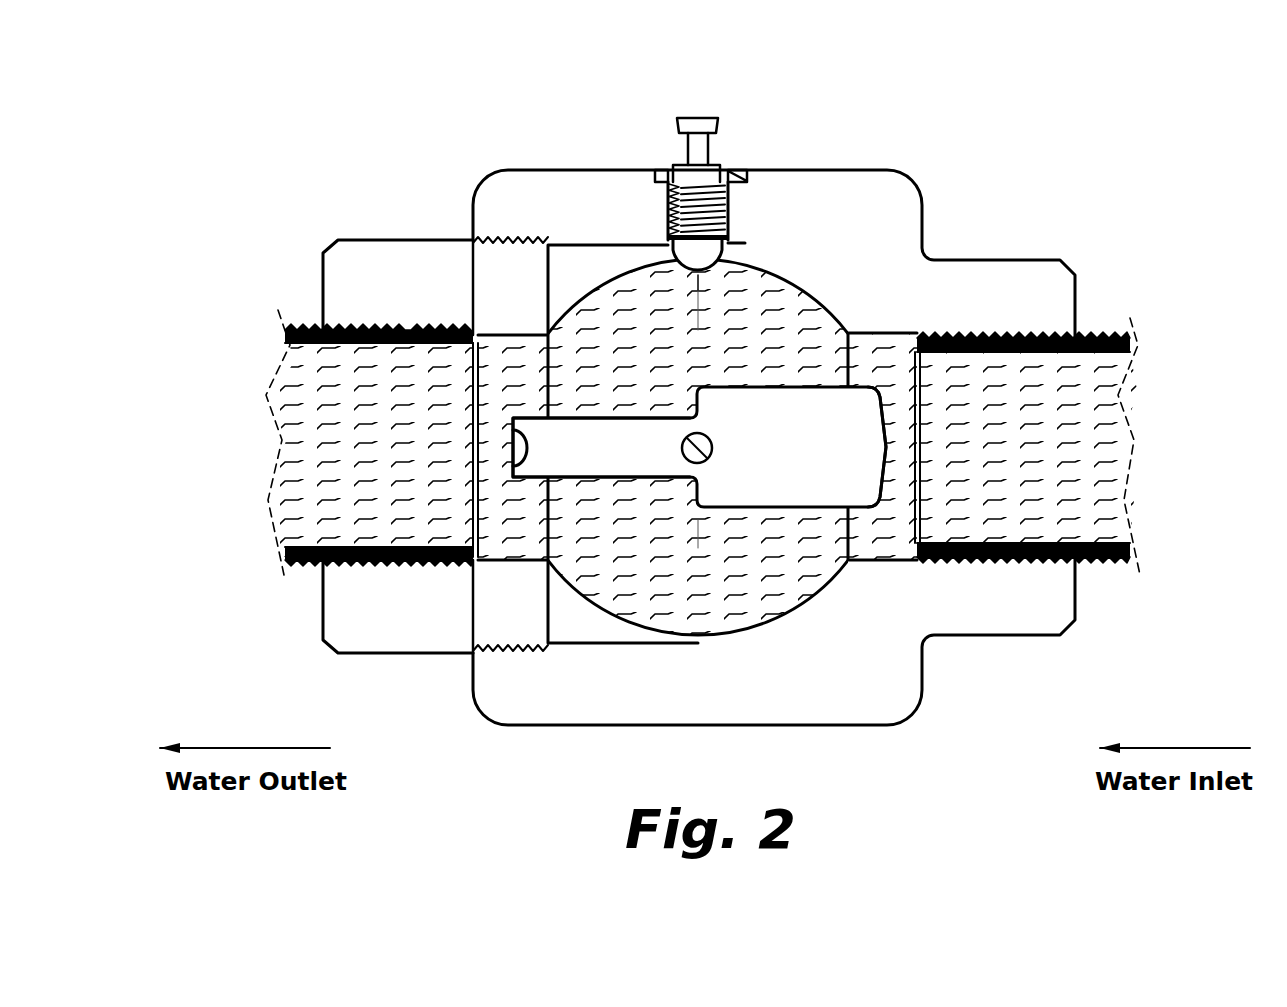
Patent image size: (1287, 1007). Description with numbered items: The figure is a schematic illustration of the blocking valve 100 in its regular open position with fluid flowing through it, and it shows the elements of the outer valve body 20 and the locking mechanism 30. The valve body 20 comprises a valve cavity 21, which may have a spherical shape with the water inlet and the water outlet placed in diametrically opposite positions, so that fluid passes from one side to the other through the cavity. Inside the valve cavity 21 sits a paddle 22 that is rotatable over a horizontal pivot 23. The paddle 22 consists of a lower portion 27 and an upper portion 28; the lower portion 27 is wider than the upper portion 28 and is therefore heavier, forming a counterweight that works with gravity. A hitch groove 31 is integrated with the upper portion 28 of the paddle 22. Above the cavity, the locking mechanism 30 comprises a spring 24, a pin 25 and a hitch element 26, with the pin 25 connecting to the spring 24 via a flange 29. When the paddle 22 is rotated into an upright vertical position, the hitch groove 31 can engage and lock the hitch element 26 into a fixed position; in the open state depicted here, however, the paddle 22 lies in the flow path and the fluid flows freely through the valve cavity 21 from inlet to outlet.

The blocking valve 100 is at (946, 142).
The outer valve body 20 is at (410, 638).
The valve cavity 21 is at (790, 580).
The paddle 22 is at (752, 465).
The horizontal pivot 23 is at (713, 443).
The spring 24 is at (727, 203).
The pin 25 is at (698, 124).
The hitch element 26 is at (728, 250).
The lower portion 27 is at (867, 440).
The upper portion 28 is at (540, 450).
The flange 29 is at (668, 233).
The locking mechanism 30 is at (705, 149).
The hitch groove 31 is at (515, 445).